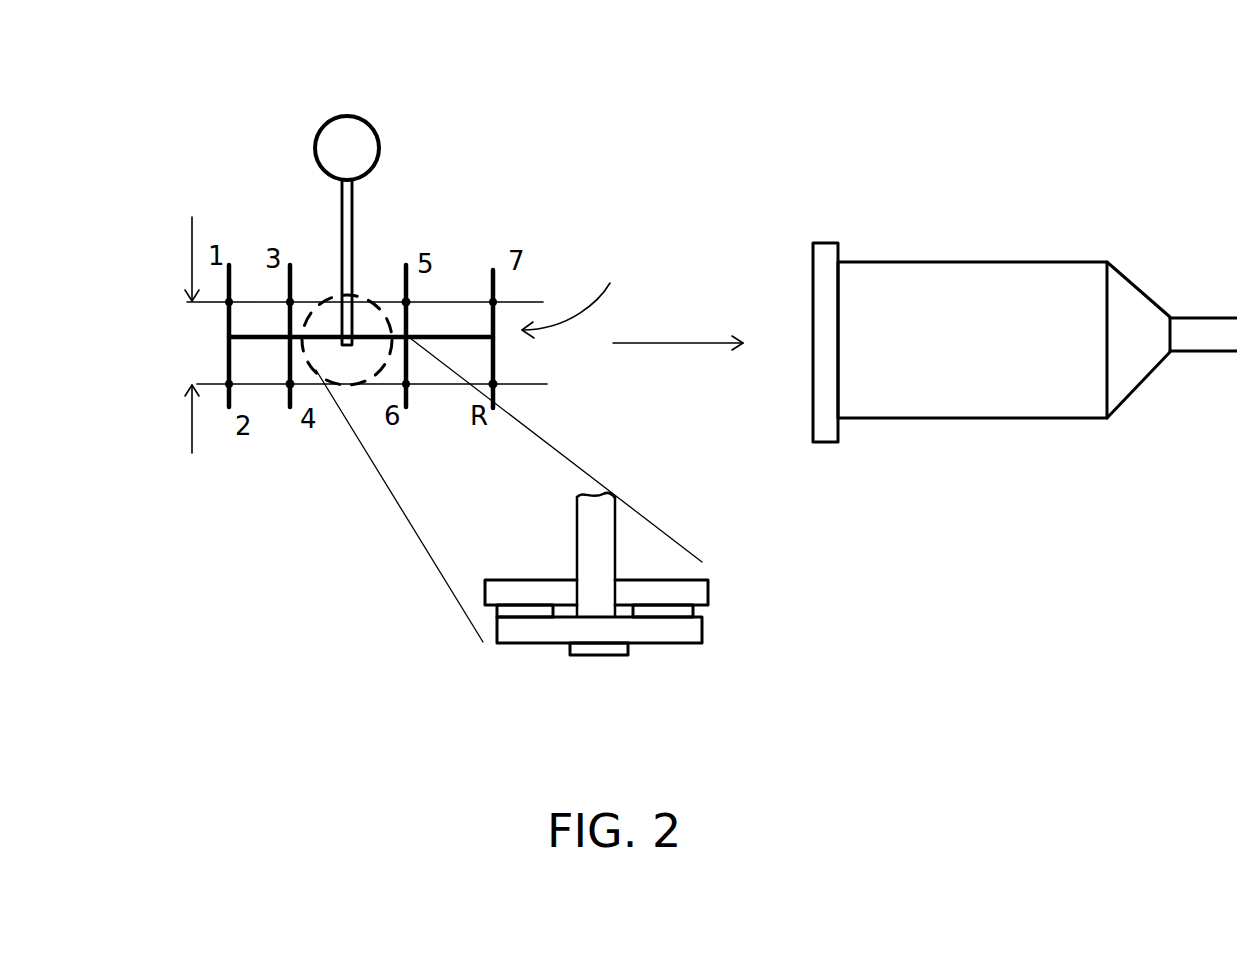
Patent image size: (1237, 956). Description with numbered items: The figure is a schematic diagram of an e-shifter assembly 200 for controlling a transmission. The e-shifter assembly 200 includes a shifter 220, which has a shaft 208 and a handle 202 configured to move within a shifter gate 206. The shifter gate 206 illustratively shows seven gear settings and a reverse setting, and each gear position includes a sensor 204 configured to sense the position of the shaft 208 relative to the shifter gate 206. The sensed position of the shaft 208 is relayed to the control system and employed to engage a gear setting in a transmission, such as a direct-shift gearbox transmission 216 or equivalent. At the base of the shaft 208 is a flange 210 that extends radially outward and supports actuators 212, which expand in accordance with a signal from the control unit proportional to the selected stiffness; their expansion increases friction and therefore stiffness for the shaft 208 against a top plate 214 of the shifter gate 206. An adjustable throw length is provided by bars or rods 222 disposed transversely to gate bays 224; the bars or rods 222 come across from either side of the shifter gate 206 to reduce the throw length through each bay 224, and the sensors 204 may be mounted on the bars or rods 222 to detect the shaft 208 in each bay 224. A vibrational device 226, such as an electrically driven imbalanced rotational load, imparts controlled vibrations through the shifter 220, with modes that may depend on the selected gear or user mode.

The e-shifter assembly 200 is at (278, 105).
The handle 202 is at (367, 148).
The sensor 204 is at (305, 278).
The shifter gate 206 is at (584, 287).
The shaft 208 is at (355, 208).
The flange 210 is at (673, 633).
The actuators 212 is at (505, 612).
The top plate 214 is at (708, 590).
The direct-shift gearbox transmission 216 is at (957, 270).
The shifter 220 is at (363, 97).
The bars or rods 222 is at (532, 300).
The gate bays 224 is at (493, 267).
The vibrational device 226 is at (593, 650).